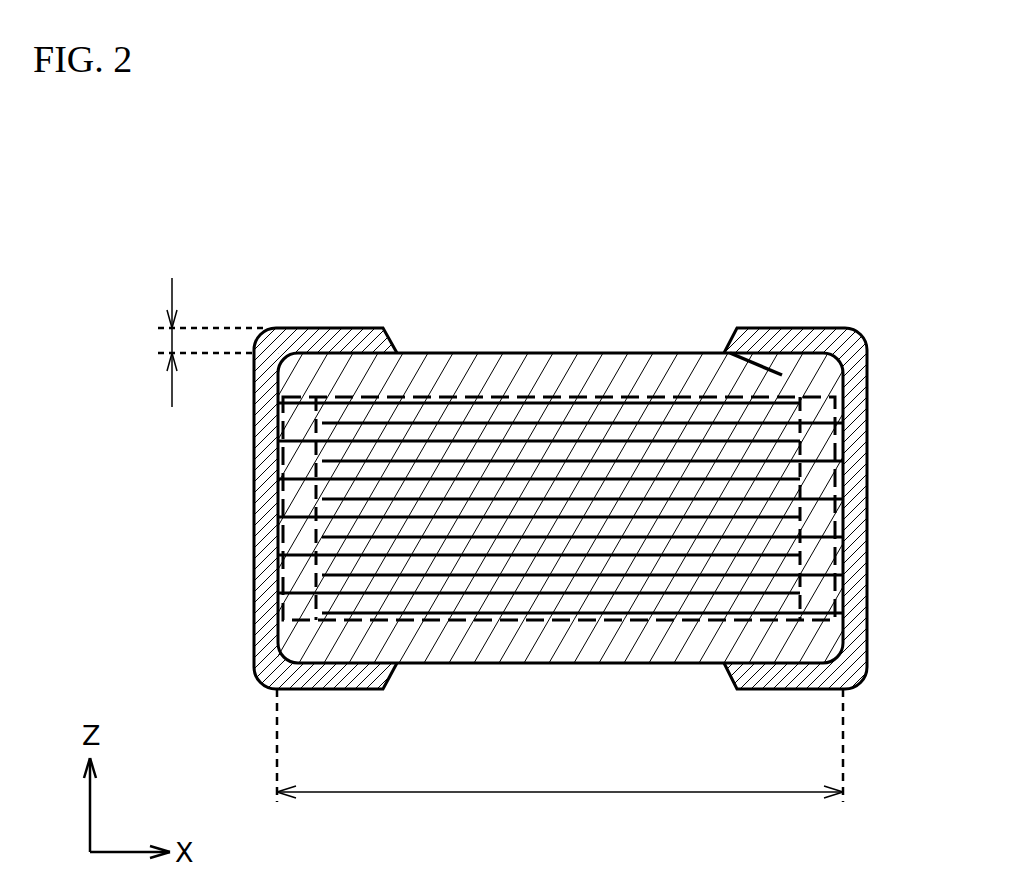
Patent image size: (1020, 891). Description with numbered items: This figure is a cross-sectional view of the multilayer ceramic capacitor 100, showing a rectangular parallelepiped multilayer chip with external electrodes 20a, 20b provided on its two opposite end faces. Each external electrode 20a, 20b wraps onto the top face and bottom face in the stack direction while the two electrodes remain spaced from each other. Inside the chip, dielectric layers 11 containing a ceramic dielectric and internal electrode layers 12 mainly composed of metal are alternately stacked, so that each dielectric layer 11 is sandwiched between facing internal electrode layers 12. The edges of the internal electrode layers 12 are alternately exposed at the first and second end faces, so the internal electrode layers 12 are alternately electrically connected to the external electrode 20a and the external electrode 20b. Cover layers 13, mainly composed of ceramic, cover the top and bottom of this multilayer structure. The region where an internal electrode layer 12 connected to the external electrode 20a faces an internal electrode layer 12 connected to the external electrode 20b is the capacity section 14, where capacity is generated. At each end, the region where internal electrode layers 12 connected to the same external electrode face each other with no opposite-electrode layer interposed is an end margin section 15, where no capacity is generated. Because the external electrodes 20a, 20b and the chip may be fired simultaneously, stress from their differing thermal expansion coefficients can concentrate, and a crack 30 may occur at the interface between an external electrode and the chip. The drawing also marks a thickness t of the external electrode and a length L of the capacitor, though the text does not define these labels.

The multilayer ceramic capacitor 100 is at (733, 274).
The external electrode 20a is at (273, 328).
The external electrode 20b is at (863, 338).
The crack 30 is at (763, 370).
The cover layer 13 is at (460, 368).
The capacity section 14 is at (582, 393).
The end margin section 15 is at (302, 397).
The internal electrode layer 12 is at (505, 557).
The dielectric layer 11 is at (660, 583).
The thickness of external electrode t is at (200, 342).
The length of capacitor L is at (560, 766).